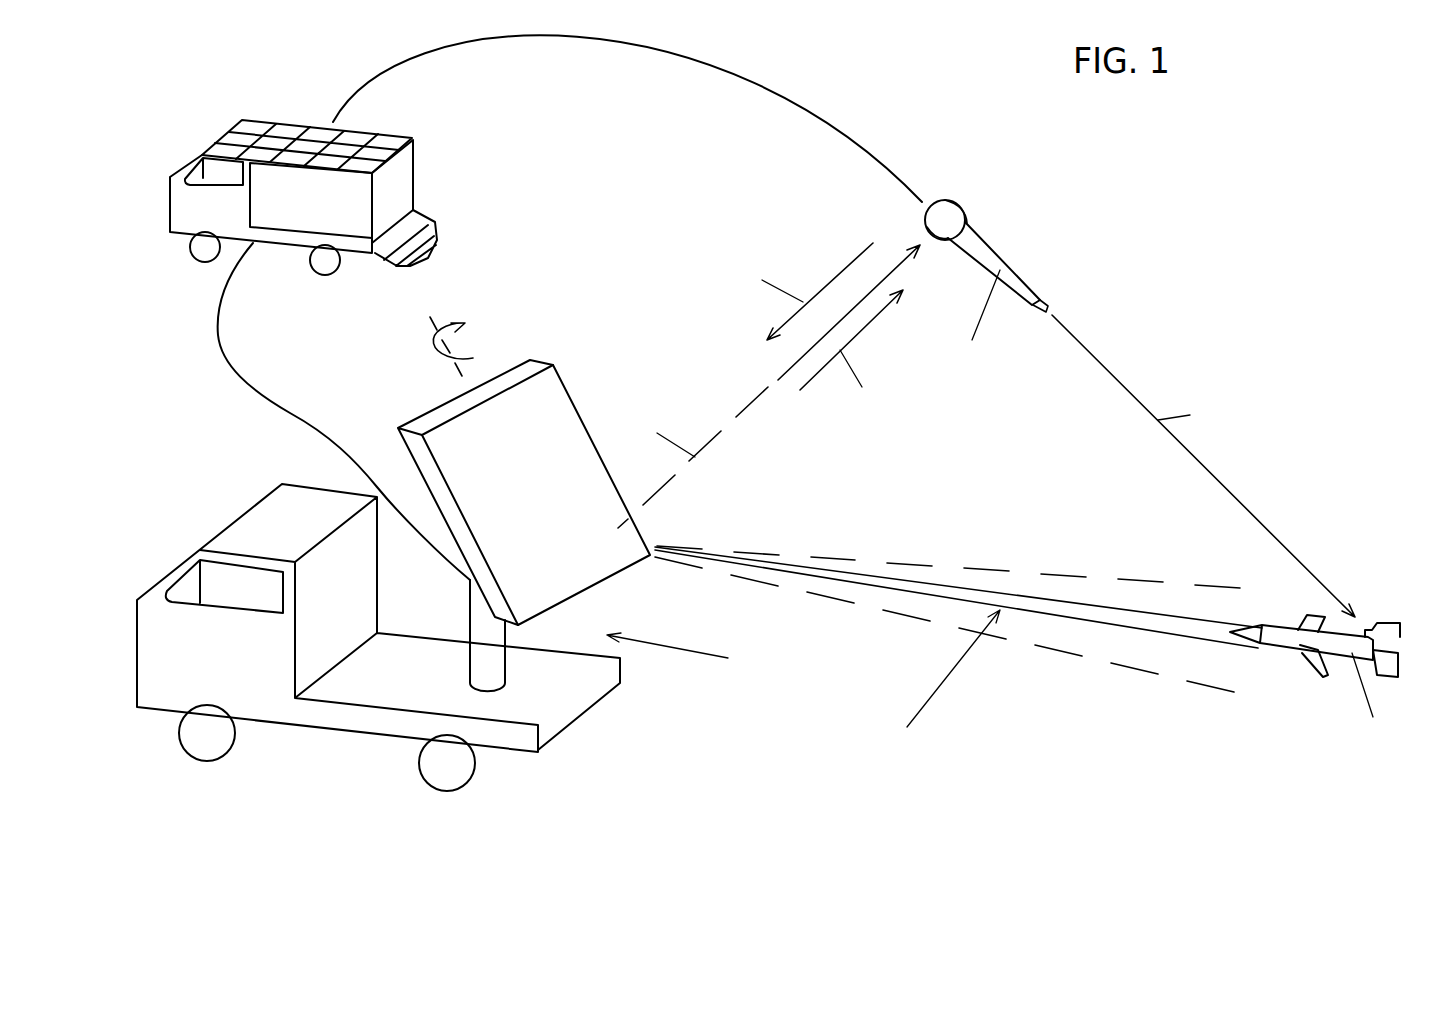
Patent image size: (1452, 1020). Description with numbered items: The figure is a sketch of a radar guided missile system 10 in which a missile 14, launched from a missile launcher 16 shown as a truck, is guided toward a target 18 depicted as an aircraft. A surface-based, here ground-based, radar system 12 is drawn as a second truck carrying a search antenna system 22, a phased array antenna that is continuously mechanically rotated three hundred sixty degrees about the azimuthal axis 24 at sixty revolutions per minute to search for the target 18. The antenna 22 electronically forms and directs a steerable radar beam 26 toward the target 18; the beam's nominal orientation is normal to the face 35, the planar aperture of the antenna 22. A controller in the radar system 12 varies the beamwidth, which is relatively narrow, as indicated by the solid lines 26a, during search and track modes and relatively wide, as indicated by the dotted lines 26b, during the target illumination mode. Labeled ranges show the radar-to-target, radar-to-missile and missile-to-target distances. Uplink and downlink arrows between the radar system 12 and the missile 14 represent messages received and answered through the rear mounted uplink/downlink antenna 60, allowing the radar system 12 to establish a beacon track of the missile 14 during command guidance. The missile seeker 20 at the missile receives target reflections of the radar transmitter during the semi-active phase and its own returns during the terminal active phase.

The radar guided missile system 10 is at (1201, 273).
The surface-based radar system 12 is at (297, 774).
The missile 14 is at (993, 247).
The missile launcher 16 is at (260, 118).
The target 18 is at (1388, 622).
The missile seeker 20 is at (1052, 293).
The search antenna system 22 is at (412, 460).
The azimuthal axis 24 is at (432, 318).
The beam 26 is at (892, 566).
The solid lines 26a is at (955, 602).
The dotted lines 26b is at (920, 563).
The face 35 is at (552, 513).
The uplink/downlink antenna 60 is at (950, 242).